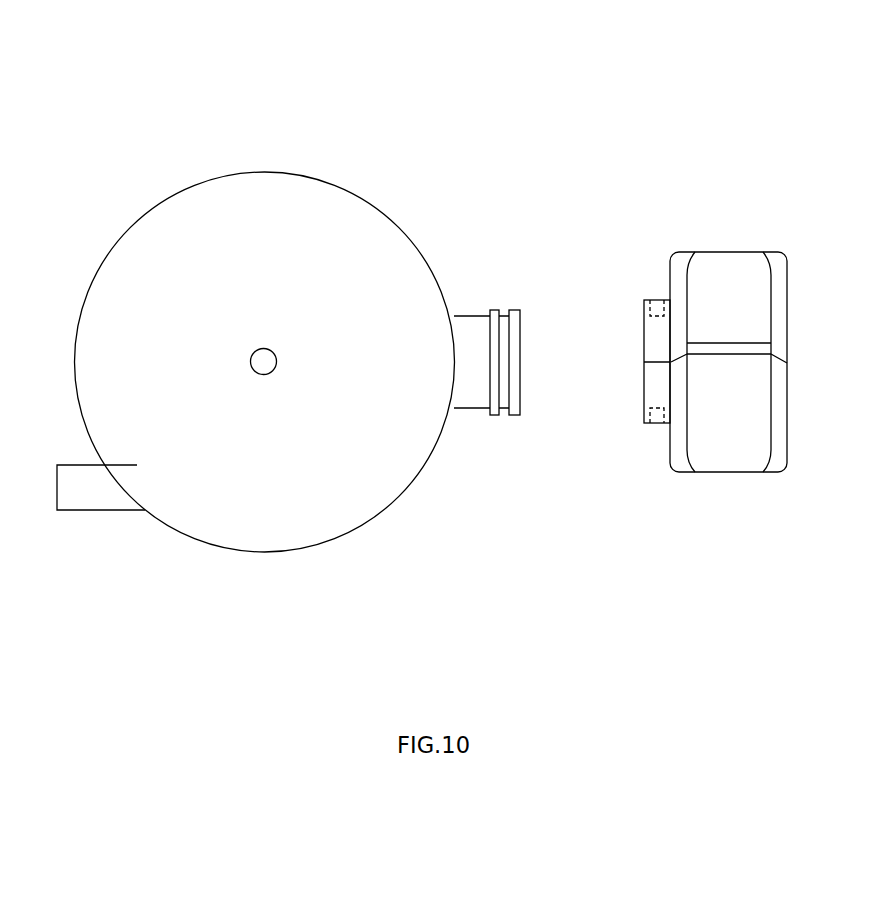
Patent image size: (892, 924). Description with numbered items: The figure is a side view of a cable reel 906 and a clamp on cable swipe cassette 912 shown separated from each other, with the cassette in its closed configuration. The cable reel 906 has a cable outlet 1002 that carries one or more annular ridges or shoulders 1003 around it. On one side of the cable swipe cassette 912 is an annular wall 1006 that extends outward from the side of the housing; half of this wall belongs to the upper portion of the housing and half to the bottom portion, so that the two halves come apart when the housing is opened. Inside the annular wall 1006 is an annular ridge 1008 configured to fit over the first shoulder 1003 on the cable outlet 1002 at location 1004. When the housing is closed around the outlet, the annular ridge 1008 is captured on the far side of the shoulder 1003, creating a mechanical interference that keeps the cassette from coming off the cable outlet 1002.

The cable reel 906 is at (187, 187).
The cable outlet 1002 is at (467, 316).
The shoulder 1003 is at (513, 310).
The location 1004 is at (503, 416).
The clamp on cable swipe cassette 912 is at (704, 337).
The annular wall 1006 is at (645, 300).
The annular ridge 1008 is at (650, 421).